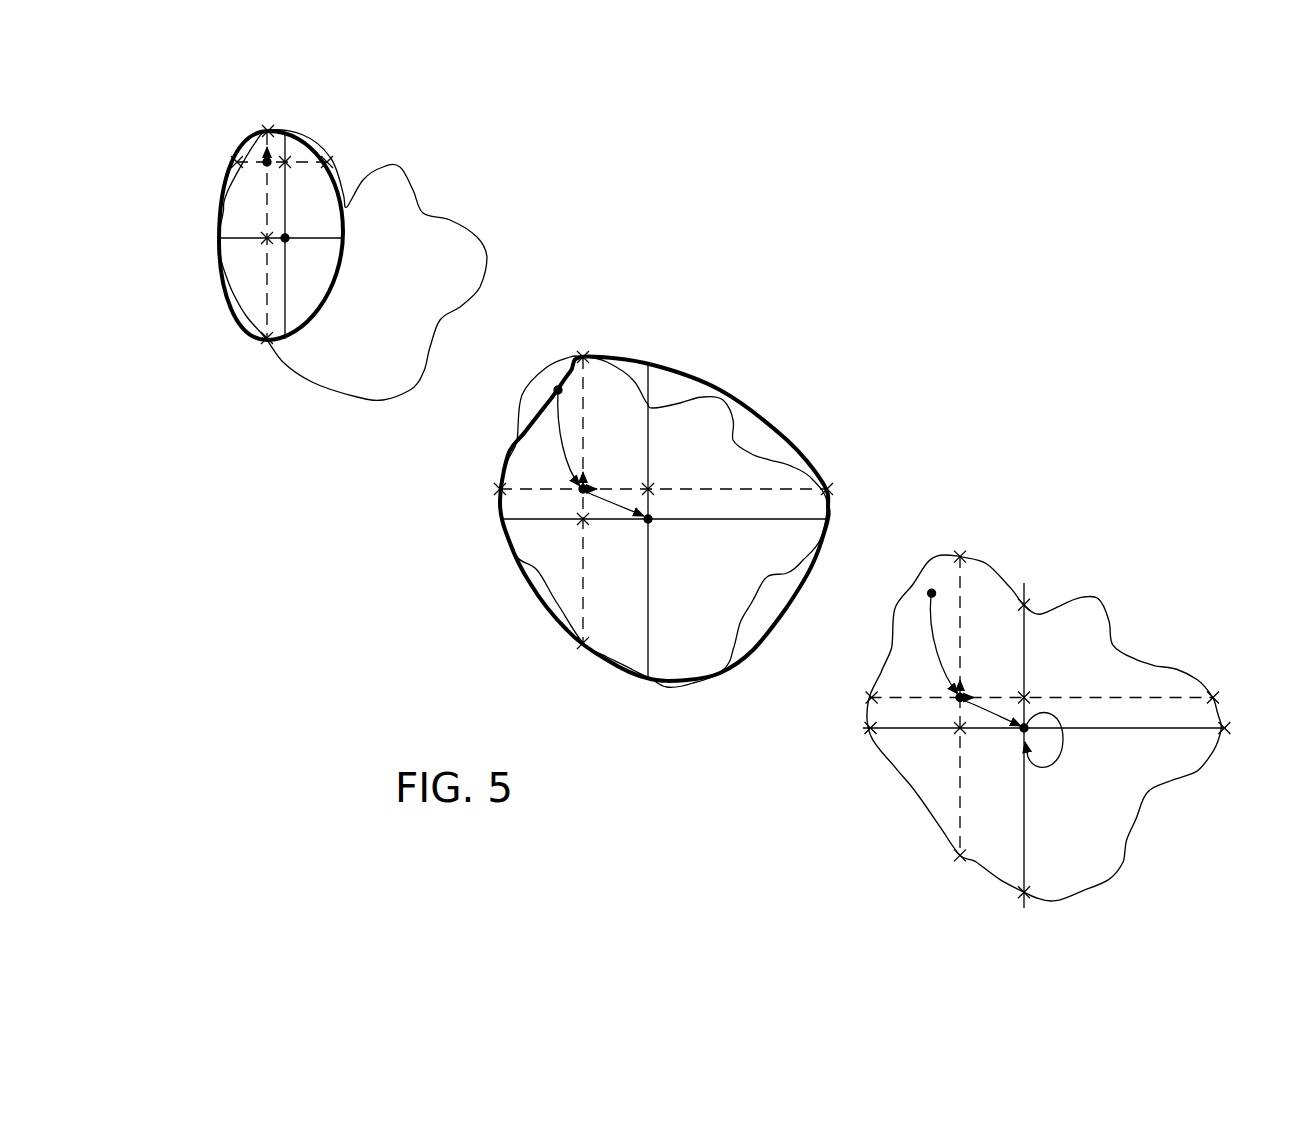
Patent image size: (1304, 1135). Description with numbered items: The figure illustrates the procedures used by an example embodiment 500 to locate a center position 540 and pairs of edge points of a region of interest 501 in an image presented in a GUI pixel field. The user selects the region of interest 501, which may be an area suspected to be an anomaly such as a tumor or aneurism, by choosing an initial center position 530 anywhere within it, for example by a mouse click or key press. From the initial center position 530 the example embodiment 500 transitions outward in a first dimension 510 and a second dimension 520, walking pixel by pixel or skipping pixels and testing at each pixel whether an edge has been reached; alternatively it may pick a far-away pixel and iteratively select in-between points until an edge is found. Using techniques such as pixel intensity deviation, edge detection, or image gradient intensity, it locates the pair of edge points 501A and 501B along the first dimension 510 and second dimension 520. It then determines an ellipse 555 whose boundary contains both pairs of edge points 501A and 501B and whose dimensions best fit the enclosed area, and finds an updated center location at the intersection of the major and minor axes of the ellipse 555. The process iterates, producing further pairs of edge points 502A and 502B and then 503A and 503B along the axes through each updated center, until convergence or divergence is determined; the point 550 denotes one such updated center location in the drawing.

The example embodiment 500 is at (884, 242).
The region of interest 501 is at (1083, 876).
The edge point 501A is at (236, 162).
The edge point 501B is at (268, 132).
The second horizontal axis boundary points 502A is at (499, 489).
The second vertical axis boundary points 502B is at (583, 356).
The edge point 503A is at (870, 730).
The edge point 503B is at (1026, 604).
The first dimension 510 is at (267, 158).
The second dimension 520 is at (272, 166).
The initial center position 530 is at (266, 164).
The center position 540 is at (285, 240).
The updated center point 550 is at (648, 521).
The ellipse 555 is at (343, 235).